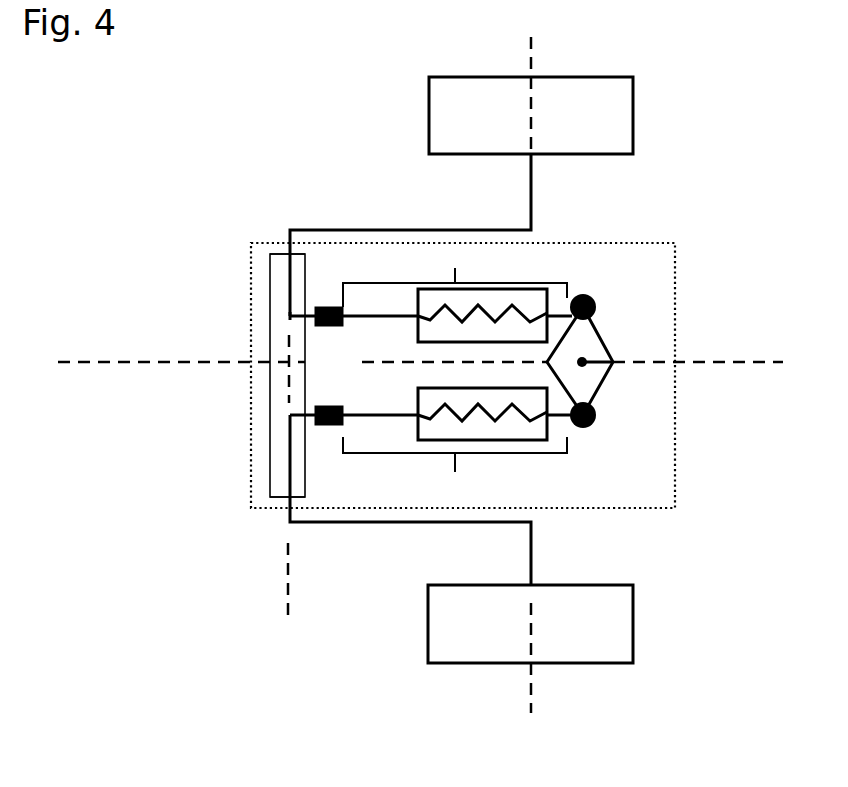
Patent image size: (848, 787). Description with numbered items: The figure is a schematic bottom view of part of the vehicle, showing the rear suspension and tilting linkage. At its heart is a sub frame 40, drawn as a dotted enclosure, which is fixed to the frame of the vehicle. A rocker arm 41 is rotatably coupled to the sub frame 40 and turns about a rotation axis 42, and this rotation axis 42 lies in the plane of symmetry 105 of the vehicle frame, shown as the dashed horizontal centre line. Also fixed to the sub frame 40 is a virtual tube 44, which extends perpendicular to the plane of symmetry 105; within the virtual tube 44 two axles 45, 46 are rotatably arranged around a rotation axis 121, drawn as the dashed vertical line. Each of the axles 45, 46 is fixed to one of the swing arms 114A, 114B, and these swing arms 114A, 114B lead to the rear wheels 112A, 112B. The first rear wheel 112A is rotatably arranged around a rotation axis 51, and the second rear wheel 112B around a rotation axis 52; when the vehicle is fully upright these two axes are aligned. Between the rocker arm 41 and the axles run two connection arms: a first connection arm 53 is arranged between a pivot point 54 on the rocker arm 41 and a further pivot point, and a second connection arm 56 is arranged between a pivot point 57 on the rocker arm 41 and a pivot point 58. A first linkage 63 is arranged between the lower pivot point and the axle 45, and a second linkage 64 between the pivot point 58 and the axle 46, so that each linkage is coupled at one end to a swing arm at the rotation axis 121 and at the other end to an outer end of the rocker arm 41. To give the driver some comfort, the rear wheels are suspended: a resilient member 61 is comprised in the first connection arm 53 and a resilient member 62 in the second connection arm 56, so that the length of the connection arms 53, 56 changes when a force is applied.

The sub frame 40 is at (676, 470).
The rocker arm 41 is at (610, 348).
The rotation axis 42 is at (615, 363).
The virtual tube 44 is at (270, 389).
The axle 45 is at (285, 473).
The axle 46 is at (280, 273).
The rotation axis 51 is at (529, 693).
The rotation axis 52 is at (532, 44).
The first connection arm 53 is at (461, 446).
The pivot point 54 is at (584, 428).
The second connection arm 56 is at (463, 272).
The pivot point 57 is at (583, 294).
The pivot point 58 is at (333, 306).
The resilient member 61 is at (549, 442).
The resilient member 62 is at (548, 287).
The first linkage 63 is at (302, 412).
The second linkage 64 is at (297, 312).
The plane of symmetry 105 is at (114, 362).
The first rear wheel 112A is at (578, 650).
The second rear wheel 112B is at (633, 121).
The swing arm 114A is at (388, 522).
The swing arm 114B is at (362, 222).
The rotation axis 121 is at (288, 567).